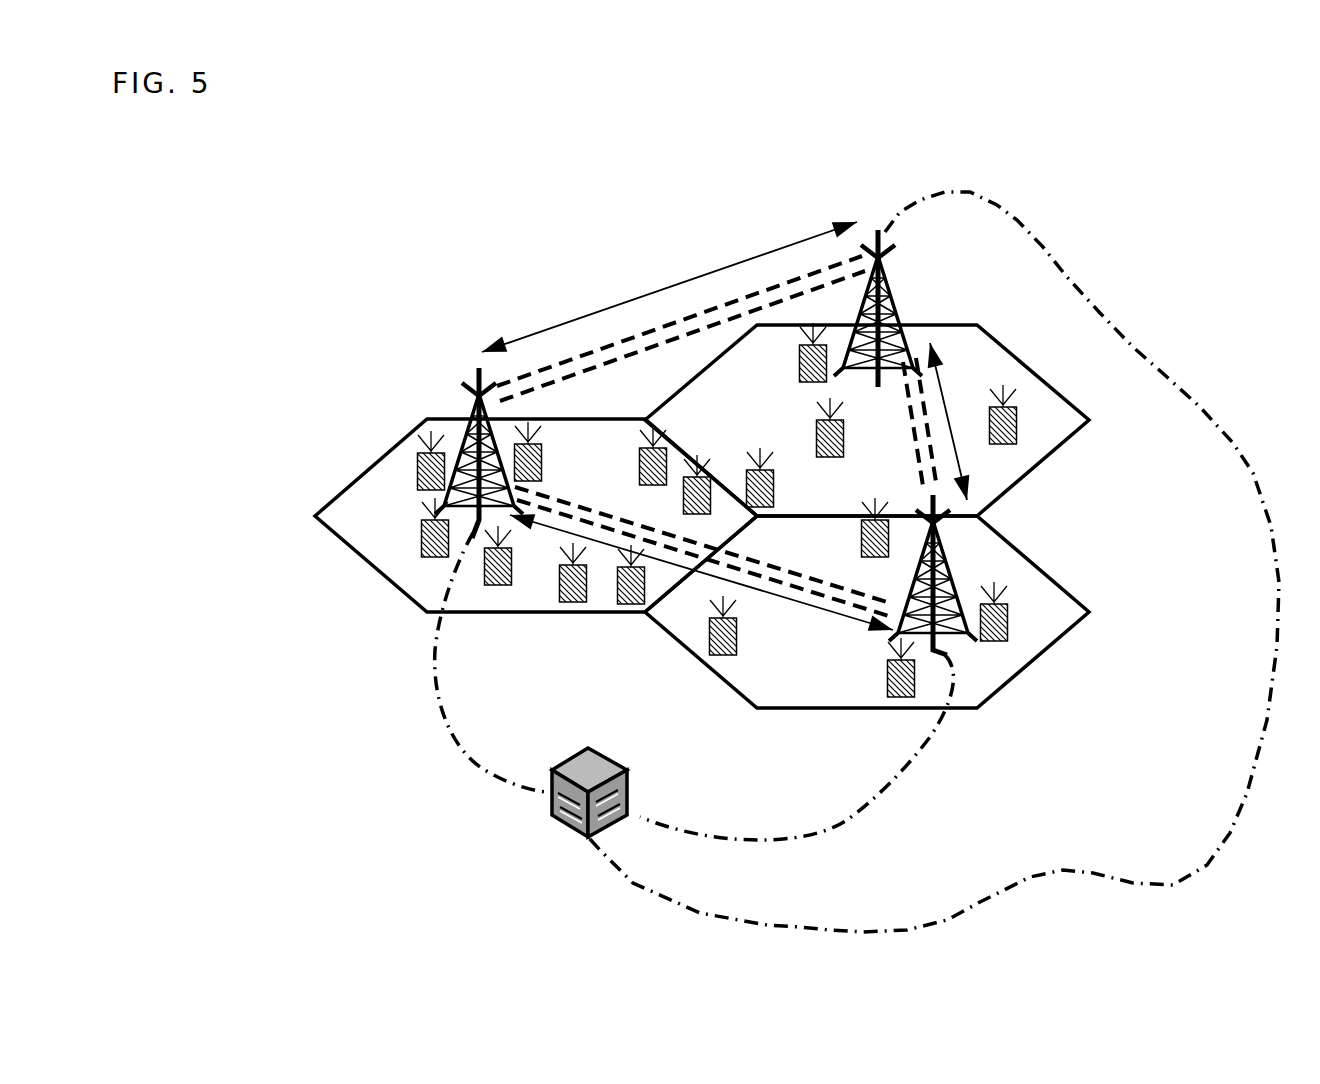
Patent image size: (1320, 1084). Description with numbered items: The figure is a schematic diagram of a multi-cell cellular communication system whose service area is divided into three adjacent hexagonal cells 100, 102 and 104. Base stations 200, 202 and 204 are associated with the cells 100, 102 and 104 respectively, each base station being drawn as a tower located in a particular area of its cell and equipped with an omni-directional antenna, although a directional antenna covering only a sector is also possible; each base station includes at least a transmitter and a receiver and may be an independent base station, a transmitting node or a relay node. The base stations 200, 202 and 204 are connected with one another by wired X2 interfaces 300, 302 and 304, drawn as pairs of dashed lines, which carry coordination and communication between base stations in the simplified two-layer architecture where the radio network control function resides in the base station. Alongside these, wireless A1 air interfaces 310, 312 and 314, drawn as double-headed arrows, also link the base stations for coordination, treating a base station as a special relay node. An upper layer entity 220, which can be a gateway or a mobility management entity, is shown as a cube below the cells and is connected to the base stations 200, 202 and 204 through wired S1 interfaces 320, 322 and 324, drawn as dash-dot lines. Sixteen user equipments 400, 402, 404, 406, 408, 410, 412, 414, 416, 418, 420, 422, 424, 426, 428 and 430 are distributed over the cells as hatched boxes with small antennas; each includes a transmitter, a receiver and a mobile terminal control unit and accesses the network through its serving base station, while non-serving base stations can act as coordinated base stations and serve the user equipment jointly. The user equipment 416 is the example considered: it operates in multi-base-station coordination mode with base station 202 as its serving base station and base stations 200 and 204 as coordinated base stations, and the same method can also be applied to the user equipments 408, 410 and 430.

The cell 100 is at (367, 468).
The cell 102 is at (1053, 388).
The cell 104 is at (997, 695).
The base station 200 is at (477, 397).
The base station 202 is at (880, 232).
The base station 204 is at (945, 540).
The upper layer entity 220 is at (550, 813).
The X2 interface 300 is at (712, 308).
The X2 interface 302 is at (773, 580).
The X2 interface 304 is at (927, 407).
The A1 interface 310 is at (715, 270).
The A1 interface 312 is at (830, 612).
The A1 interface 314 is at (945, 360).
The S1 interface 320 is at (458, 738).
The S1 interface 322 is at (1263, 720).
The S1 interface 324 is at (843, 826).
The user equipment 400 is at (545, 462).
The user equipment 402 is at (497, 586).
The user equipment 404 is at (415, 452).
The user equipment 406 is at (433, 557).
The user equipment 408 is at (636, 447).
The user equipment 410 is at (683, 493).
The user equipment 412 is at (632, 604).
The user equipment 414 is at (567, 604).
The user equipment 416 is at (758, 450).
The user equipment 418 is at (826, 370).
The user equipment 420 is at (843, 445).
The user equipment 422 is at (1018, 427).
The user equipment 424 is at (1009, 627).
The user equipment 426 is at (893, 697).
The user equipment 428 is at (726, 658).
The user equipment 430 is at (860, 537).